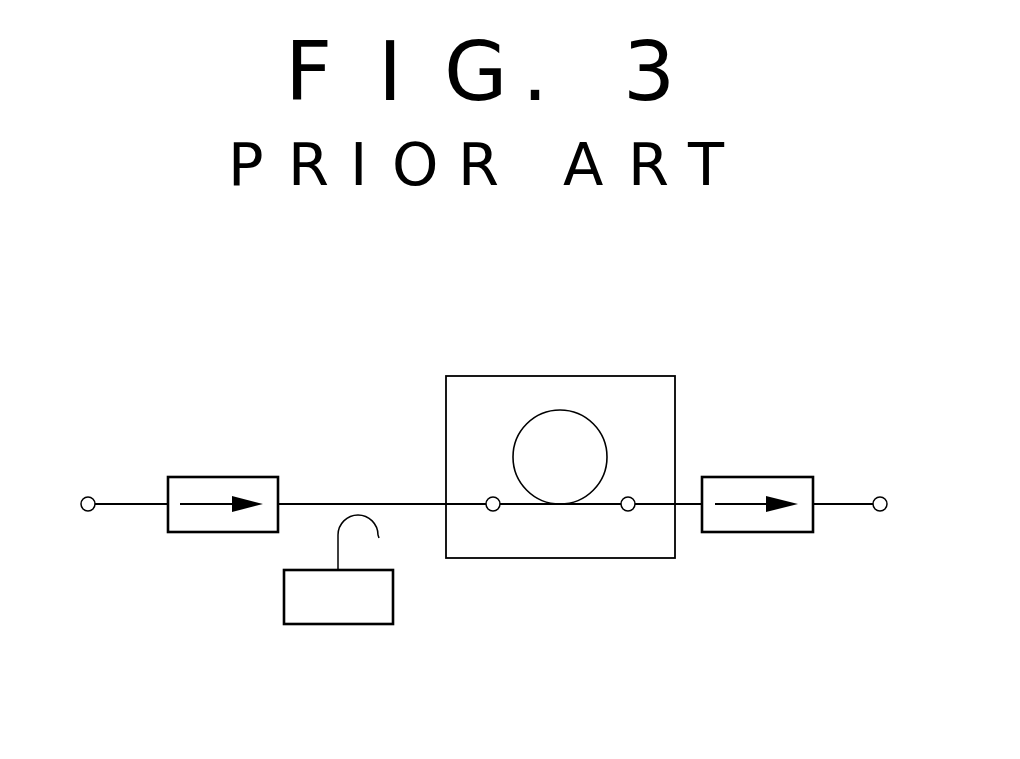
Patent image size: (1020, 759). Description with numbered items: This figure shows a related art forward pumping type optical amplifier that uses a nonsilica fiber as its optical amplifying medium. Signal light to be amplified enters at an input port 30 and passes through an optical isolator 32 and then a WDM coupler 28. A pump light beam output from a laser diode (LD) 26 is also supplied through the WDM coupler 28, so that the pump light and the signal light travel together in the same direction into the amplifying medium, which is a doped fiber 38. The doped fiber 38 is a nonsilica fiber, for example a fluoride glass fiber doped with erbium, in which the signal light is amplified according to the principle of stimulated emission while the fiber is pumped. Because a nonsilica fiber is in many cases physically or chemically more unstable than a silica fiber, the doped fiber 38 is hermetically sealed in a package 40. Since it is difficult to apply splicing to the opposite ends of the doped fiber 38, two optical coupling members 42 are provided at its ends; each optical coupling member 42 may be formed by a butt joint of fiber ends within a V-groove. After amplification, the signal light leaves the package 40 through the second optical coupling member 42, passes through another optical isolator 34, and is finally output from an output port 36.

The laser diode (LD) 26 is at (310, 624).
The WDM coupler 28 is at (403, 502).
The input port 30 is at (88, 497).
The optical isolator 32 is at (235, 477).
The optical isolator 34 is at (720, 532).
The output port 36 is at (880, 497).
The doped fiber 38 is at (603, 431).
The package 40 is at (545, 376).
The optical coupling member 42 is at (492, 511).